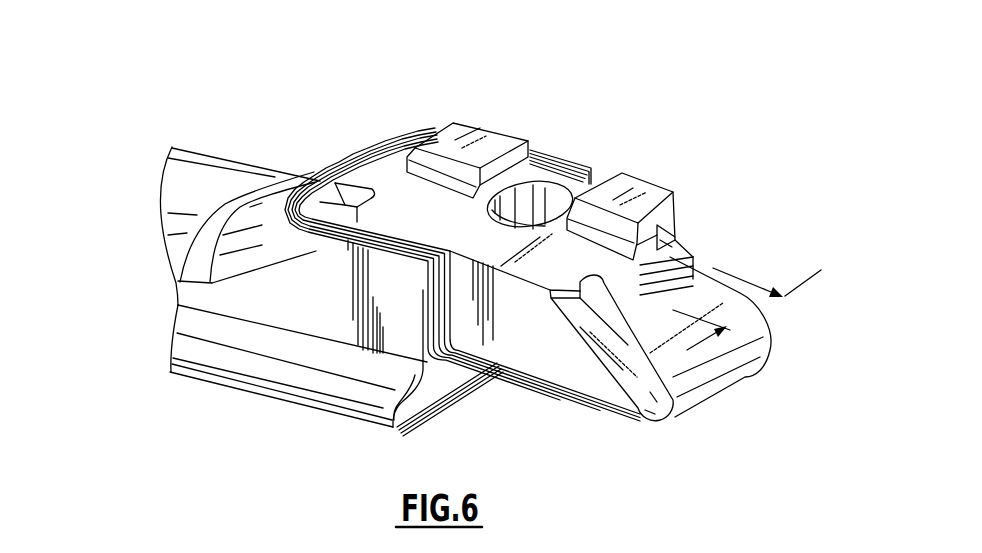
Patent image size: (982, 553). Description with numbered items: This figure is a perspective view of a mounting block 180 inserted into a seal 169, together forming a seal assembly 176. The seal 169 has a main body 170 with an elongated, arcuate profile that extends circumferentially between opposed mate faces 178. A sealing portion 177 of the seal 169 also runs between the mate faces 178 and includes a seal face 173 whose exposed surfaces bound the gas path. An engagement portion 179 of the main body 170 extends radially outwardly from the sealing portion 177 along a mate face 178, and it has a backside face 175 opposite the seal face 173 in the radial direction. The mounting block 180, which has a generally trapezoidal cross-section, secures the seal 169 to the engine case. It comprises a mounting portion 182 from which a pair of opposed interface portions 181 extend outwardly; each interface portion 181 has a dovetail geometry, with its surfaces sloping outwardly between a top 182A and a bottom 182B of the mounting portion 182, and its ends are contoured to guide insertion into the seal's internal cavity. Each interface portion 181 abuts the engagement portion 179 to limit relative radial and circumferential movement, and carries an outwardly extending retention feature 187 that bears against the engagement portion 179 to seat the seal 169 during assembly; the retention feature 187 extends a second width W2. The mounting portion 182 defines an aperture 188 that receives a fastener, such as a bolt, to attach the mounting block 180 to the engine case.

The seal assembly 176 is at (149, 50).
The seal 169 is at (238, 140).
The backside face 175 is at (178, 187).
The main body 170 is at (170, 203).
The retention feature 187 is at (380, 167).
The engagement portion 179 is at (418, 130).
The mounting portion 182 is at (547, 178).
The aperture 188 is at (556, 198).
The mounting block 180 is at (678, 175).
The second width W2 is at (818, 279).
The interface portion 181 is at (336, 199).
The top of the mounting portion 182A is at (528, 264).
The sealing portion 177 is at (303, 378).
The seal face 173 is at (411, 428).
The mate face 178 is at (433, 400).
The bottom of the mounting portion 182B is at (612, 412).